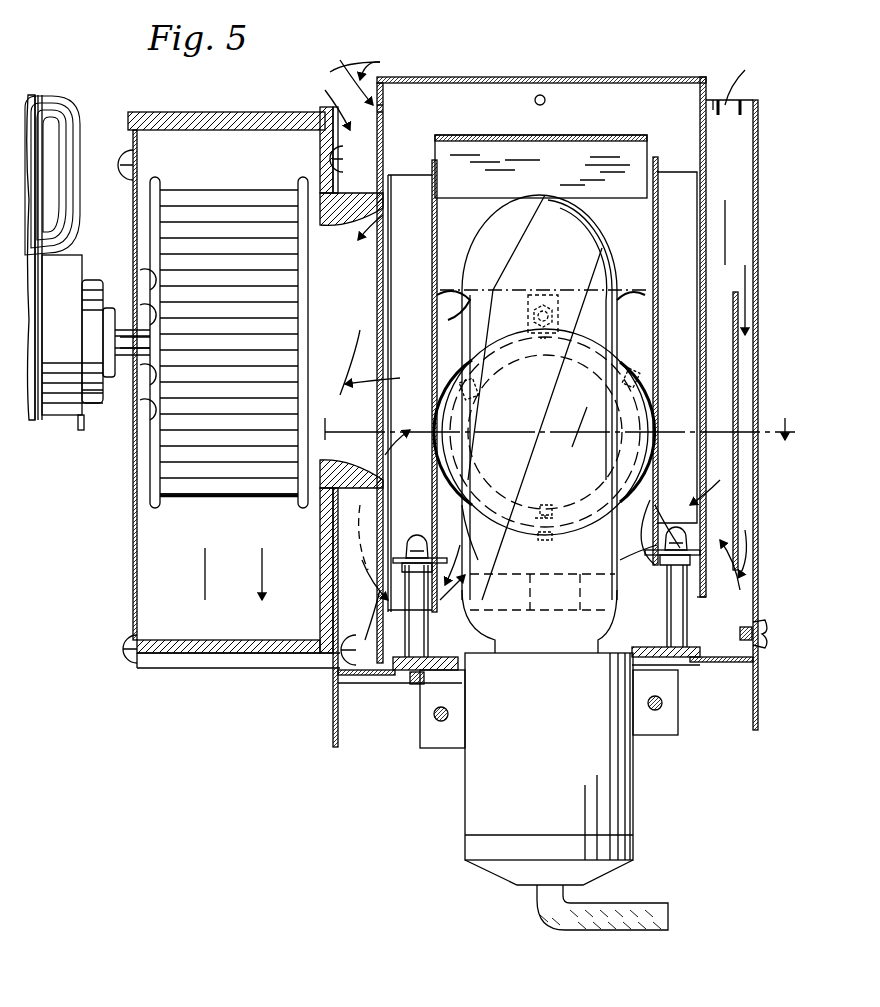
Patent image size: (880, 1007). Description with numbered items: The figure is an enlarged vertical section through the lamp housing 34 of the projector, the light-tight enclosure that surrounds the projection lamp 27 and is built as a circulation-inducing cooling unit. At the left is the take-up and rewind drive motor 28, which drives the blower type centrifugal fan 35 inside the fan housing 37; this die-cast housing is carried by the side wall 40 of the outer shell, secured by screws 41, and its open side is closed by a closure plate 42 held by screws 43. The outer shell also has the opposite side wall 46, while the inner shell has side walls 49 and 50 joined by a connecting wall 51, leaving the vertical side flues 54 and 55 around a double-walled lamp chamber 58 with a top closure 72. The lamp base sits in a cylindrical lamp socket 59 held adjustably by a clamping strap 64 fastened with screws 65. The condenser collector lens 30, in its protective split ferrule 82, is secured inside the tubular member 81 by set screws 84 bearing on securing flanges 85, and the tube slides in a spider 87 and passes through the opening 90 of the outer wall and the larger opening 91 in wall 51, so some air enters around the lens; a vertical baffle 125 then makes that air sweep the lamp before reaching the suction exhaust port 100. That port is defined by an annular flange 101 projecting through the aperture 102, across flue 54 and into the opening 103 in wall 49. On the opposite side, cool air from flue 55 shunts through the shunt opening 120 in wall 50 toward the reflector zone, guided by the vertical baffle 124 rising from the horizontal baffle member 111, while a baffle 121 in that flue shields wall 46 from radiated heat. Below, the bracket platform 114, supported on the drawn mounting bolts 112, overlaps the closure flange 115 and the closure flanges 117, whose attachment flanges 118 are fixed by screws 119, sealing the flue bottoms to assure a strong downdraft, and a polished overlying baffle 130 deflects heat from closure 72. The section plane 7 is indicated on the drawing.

The section line 7- 7 is at (556, 441).
The projection lamp 27 is at (605, 220).
The take-up and rewind drive motor 28 is at (35, 425).
The condenser collector lens 30 is at (440, 410).
The lamp housing 34 is at (578, 55).
The blower type centrifugal fan 35 is at (178, 500).
The fan housing 37 is at (238, 672).
The side wall 40 is at (333, 722).
The screws 41 is at (353, 648).
The closure plate 42 is at (133, 595).
The screws 43 is at (128, 662).
The side wall 46 is at (753, 735).
The side wall 49 is at (383, 130).
The side wall 50 is at (706, 120).
The connecting wall 51 is at (462, 610).
The vertical side flue 54 is at (330, 75).
The vertical side flue 55 is at (727, 90).
The lamp chamber 58 is at (597, 77).
The lamp socket 59 is at (465, 800).
The clamping strap 64 is at (430, 728).
The screws 65 is at (452, 714).
The top closure 72 is at (510, 77).
The tubular member 81 is at (472, 480).
The protective split ferrule 82 is at (468, 450).
The set screws 84 is at (468, 385).
The securing flanges 85 is at (552, 512).
The spider 87 is at (480, 540).
The opening 90 is at (498, 320).
The opening 91 is at (466, 285).
The suction exhaust port 100 is at (375, 305).
The annular flange 101 is at (348, 522).
The aperture 102 is at (338, 185).
The opening 103 is at (383, 488).
The horizontal baffle member 111 is at (656, 570).
The mounting bolt 112 is at (415, 598).
The bracket platform 114 is at (452, 660).
The closure flange 115 is at (410, 680).
The closure flanges 117 is at (378, 678).
The attachment flanges 118 is at (380, 664).
The screws 119 is at (765, 630).
The shunt opening 120 is at (698, 390).
The baffle 121 is at (738, 510).
The vertical baffle 124 is at (658, 235).
The vertical baffle 125 is at (440, 232).
The overlying baffle 130 is at (598, 160).